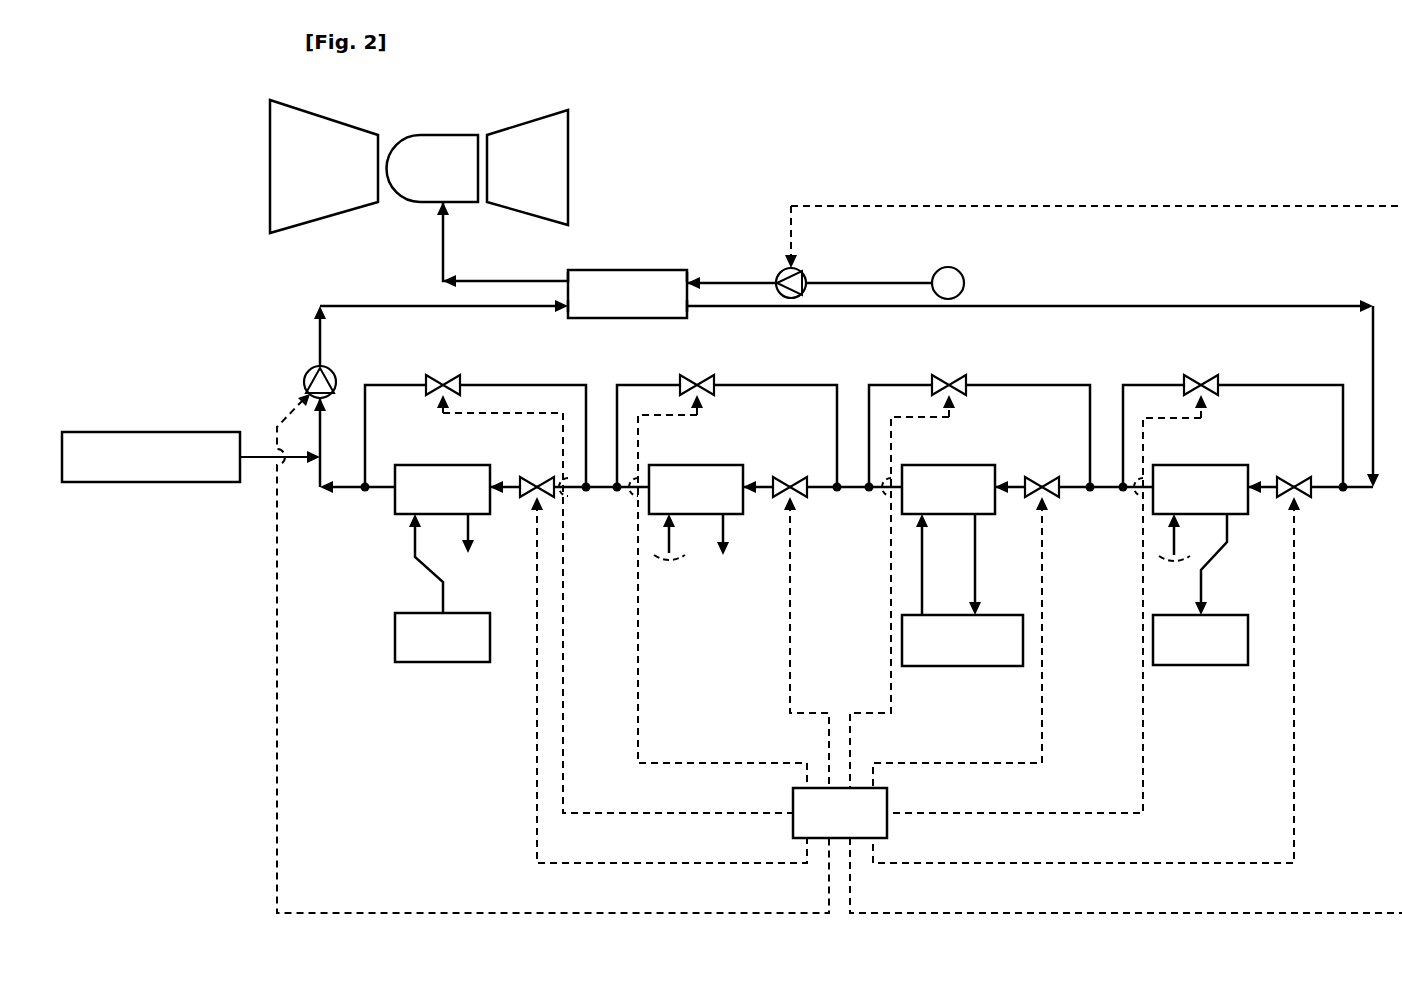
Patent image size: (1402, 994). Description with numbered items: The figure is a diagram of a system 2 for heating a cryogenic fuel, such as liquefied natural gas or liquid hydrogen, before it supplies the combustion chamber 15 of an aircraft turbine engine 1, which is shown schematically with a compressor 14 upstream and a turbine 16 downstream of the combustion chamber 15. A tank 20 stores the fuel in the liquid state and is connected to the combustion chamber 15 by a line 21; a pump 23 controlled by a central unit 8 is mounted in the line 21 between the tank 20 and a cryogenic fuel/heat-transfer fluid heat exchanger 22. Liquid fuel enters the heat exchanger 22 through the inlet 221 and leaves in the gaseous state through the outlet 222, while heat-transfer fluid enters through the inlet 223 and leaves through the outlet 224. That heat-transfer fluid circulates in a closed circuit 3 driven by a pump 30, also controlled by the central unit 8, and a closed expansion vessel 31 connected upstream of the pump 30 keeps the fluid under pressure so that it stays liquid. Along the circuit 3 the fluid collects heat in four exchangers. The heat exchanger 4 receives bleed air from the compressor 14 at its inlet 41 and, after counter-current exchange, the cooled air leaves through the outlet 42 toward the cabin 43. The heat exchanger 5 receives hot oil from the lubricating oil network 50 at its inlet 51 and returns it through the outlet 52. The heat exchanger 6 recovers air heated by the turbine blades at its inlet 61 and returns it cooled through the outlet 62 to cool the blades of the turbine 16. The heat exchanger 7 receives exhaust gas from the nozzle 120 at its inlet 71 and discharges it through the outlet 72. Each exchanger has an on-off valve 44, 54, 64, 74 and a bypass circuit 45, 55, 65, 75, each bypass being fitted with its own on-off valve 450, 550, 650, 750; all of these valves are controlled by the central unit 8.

The turbine engine 1 is at (454, 162).
The system 2 is at (918, 105).
The closed circuit 3 is at (1113, 306).
The heat exchanger 4 is at (1172, 478).
The heat exchanger 5 is at (918, 478).
The heat exchanger 6 is at (668, 478).
The heat exchanger 7 is at (408, 475).
The central unit 8 is at (874, 802).
The compressor 14 is at (324, 166).
The combustion chamber 15 is at (433, 168).
The turbine 16 is at (527, 167).
The tank 20 is at (977, 271).
The line 21 is at (503, 280).
The heat exchanger 22 is at (617, 318).
The pump 23 is at (816, 273).
The pump 30 is at (342, 368).
The closed expansion vessel 31 is at (124, 477).
The inlet 41 is at (1172, 540).
The outlet 42 is at (1231, 530).
The cabin 43 is at (1232, 653).
The on-off valve 44 is at (1296, 475).
The bypass circuit 45 is at (1277, 385).
The lubricating oil network 50 is at (1015, 660).
The inlet 51 is at (925, 540).
The outlet 52 is at (978, 528).
The on-off valve 54 is at (1044, 474).
The bypass circuit 55 is at (1025, 385).
The inlet 61 is at (672, 540).
The outlet 62 is at (733, 528).
The on-off valve 64 is at (791, 474).
The bypass circuit 65 is at (770, 385).
The inlet 71 is at (410, 540).
The outlet 72 is at (472, 528).
The on-off valve 74 is at (539, 474).
The bypass circuit 75 is at (520, 385).
The nozzle 120 is at (427, 660).
The inlet 221 is at (690, 268).
The outlet 222 is at (568, 268).
The inlet 223 is at (566, 318).
The outlet 224 is at (690, 320).
The on-off valve 450 is at (1198, 371).
The on-off valve 550 is at (946, 371).
The on-off valve 650 is at (693, 371).
The on-off valve 750 is at (438, 370).